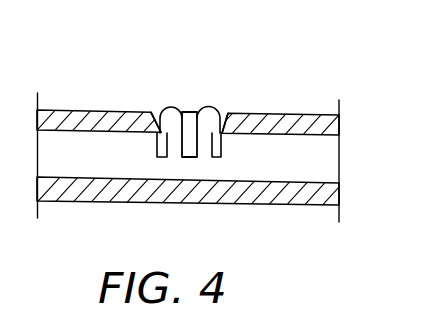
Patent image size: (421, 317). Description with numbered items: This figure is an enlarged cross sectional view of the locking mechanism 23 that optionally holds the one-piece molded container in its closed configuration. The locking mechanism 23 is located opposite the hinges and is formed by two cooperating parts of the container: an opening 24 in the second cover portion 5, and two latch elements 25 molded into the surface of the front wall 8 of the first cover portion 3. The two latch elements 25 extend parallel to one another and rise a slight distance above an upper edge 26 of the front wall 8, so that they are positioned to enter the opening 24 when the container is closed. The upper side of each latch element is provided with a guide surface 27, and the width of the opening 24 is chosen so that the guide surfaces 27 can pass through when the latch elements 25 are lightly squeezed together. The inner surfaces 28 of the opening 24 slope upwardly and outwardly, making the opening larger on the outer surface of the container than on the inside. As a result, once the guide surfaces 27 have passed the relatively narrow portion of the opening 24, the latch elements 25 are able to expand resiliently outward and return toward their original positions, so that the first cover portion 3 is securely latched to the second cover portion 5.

The first cover portion 3 is at (285, 197).
The second cover portion 5 is at (195, 126).
The front wall 8 is at (322, 165).
The locking mechanism 23 is at (207, 92).
The opening 24 is at (189, 97).
The latch elements 25 is at (142, 91).
The upper edge 26 is at (62, 116).
The guide surfaces 27 is at (168, 107).
The inner surfaces 28 is at (155, 131).